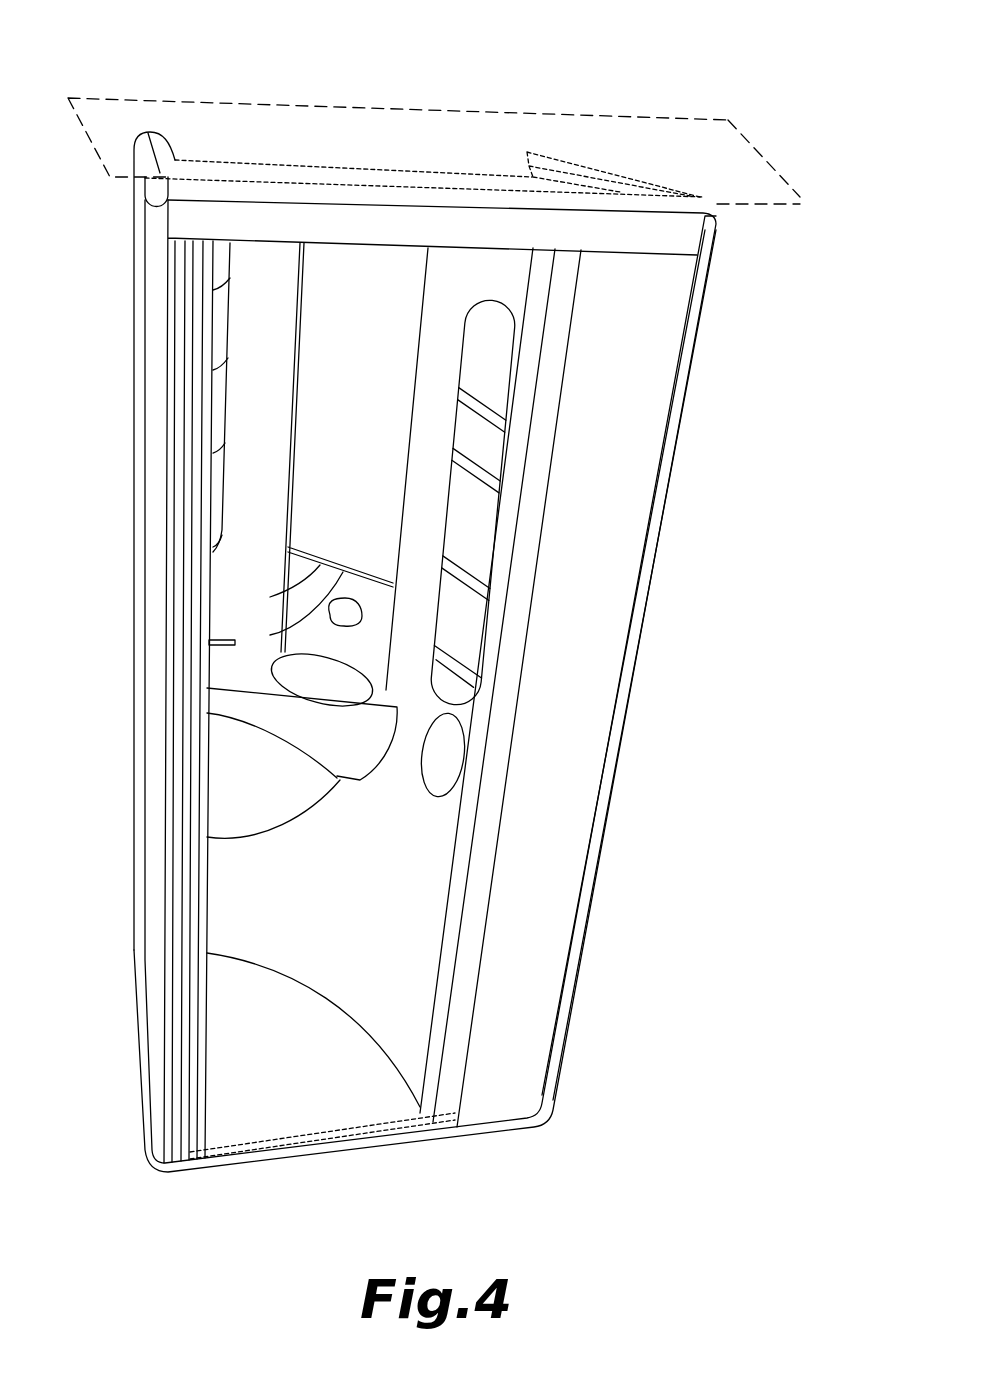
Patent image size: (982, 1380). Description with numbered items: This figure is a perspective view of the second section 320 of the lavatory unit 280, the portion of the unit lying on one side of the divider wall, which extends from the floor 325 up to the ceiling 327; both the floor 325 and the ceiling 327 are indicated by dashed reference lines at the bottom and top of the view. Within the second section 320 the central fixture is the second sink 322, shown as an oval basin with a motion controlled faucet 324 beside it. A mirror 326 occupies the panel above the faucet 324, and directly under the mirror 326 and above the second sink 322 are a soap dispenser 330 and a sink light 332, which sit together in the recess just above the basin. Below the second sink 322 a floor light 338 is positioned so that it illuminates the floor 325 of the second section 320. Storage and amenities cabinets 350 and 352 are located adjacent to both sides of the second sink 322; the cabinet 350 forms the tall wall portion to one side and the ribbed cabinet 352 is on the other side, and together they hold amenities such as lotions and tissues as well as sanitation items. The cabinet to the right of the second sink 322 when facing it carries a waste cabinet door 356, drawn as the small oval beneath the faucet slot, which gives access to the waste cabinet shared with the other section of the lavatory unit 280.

The lavatory unit 280 is at (757, 197).
The second section 320 is at (400, 953).
The second sink 322 is at (325, 678).
The motion controlled faucet 324 is at (358, 622).
The floor 325 is at (283, 1113).
The mirror 326 is at (323, 403).
The ceiling 327 is at (182, 100).
The soap dispenser 330 is at (291, 591).
The sink light 332 is at (287, 634).
The floor light 338 is at (215, 836).
The storage and amenities cabinet 350 is at (633, 415).
The storage and amenities cabinet 352 is at (217, 487).
The waste cabinet door 356 is at (447, 757).